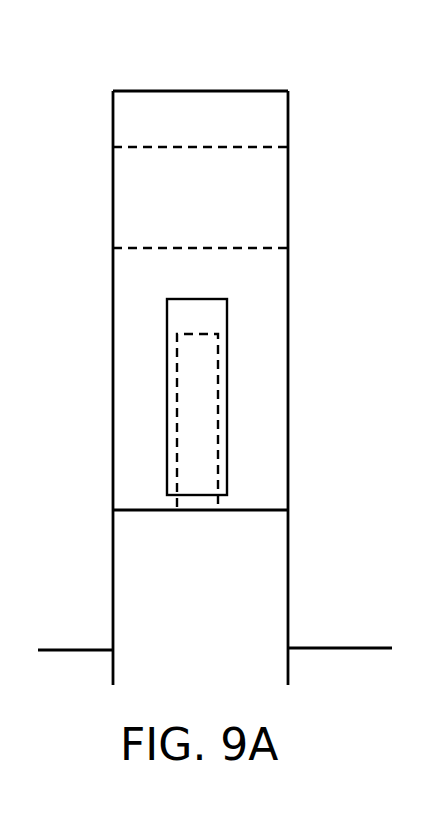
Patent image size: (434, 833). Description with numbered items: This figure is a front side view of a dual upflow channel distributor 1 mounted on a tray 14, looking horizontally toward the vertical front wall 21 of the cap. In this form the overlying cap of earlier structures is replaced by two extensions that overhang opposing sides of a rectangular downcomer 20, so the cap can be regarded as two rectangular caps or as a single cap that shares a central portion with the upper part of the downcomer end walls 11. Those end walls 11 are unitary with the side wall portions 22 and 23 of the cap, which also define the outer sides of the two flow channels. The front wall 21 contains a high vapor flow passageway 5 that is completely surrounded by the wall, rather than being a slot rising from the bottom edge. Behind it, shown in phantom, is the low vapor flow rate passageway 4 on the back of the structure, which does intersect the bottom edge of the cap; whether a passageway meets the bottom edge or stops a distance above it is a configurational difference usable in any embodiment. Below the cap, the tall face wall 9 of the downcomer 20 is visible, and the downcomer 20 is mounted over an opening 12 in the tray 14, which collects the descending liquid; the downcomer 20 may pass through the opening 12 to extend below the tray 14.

The distributor 1 is at (295, 50).
The side wall portion 22 is at (113, 125).
The side wall portion 23 is at (289, 118).
The downcomer end wall 11 is at (112, 338).
The high vapor flow passageway 5 is at (192, 316).
The low vapor flow rate passageway 4 is at (198, 382).
The front wall 21 is at (270, 479).
The downcomer 20 is at (290, 554).
The tall face wall 9 is at (210, 619).
The tray 14 is at (322, 648).
The opening 12 is at (197, 683).